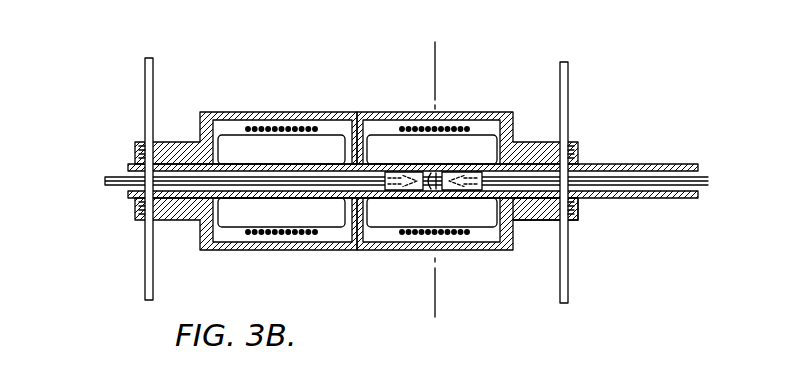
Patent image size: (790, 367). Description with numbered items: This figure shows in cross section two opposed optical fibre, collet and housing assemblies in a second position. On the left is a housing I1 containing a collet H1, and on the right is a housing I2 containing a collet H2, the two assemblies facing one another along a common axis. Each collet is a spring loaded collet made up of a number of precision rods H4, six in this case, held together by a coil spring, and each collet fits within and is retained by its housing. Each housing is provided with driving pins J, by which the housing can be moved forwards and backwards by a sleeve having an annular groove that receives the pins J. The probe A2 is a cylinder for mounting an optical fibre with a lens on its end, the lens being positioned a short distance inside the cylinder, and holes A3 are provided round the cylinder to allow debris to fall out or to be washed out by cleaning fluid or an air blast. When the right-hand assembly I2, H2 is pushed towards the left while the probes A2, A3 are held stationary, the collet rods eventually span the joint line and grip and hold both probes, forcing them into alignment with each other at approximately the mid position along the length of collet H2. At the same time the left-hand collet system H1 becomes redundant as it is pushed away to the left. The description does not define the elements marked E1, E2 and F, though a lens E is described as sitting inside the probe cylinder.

The housing I1 is at (263, 112).
The housing I2 is at (490, 113).
The collet H1 is at (240, 210).
The collet H2 is at (473, 217).
The precision rods H4 is at (467, 147).
The electromagnetic element E1 is at (420, 178).
The electromagnetic element E2 is at (437, 190).
The second probe A2 is at (540, 222).
The holes A3 is at (384, 198).
The shaft F is at (105, 178).
The driving pins J is at (145, 278).